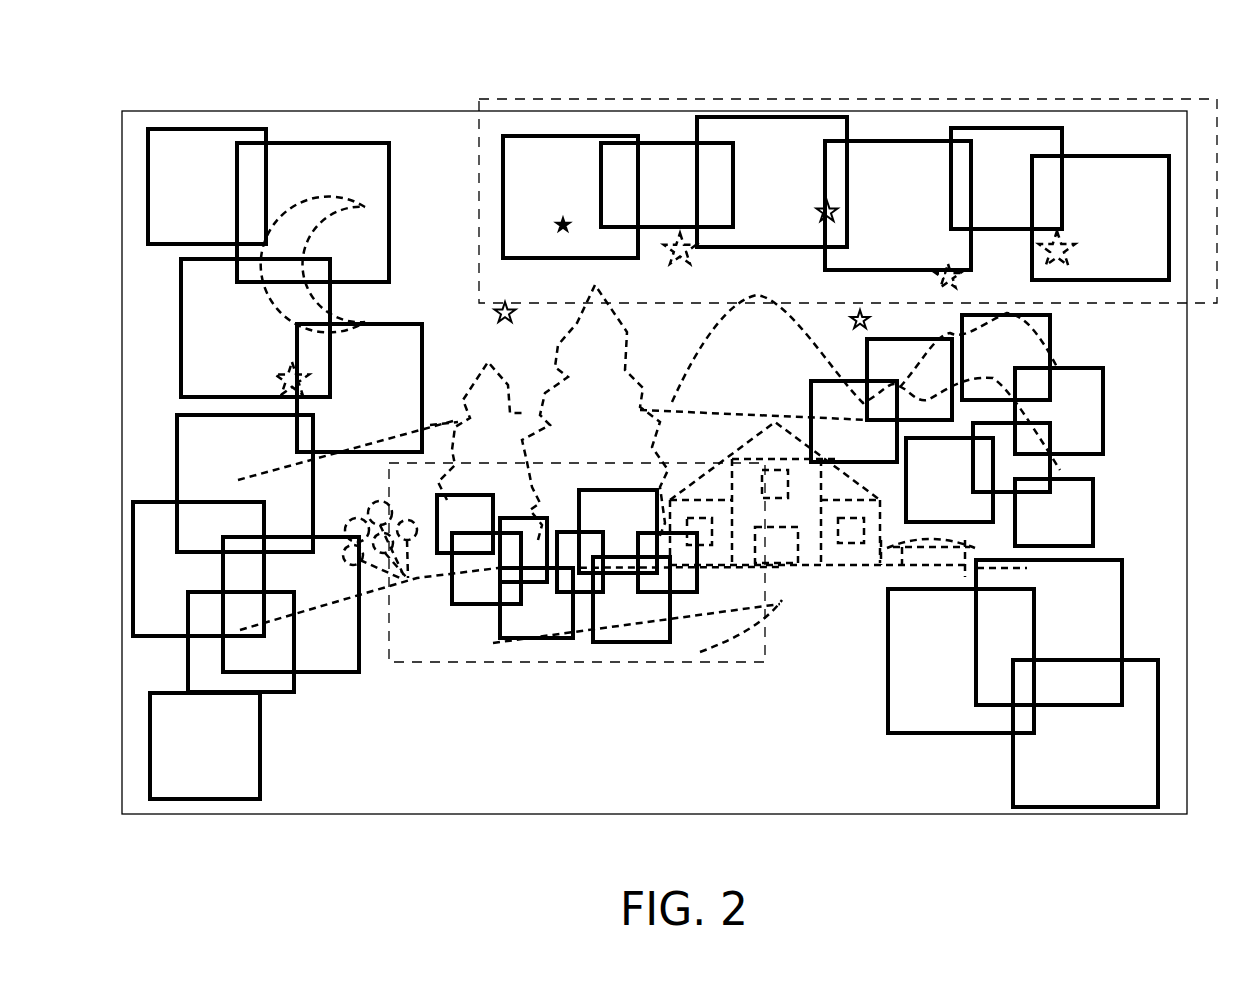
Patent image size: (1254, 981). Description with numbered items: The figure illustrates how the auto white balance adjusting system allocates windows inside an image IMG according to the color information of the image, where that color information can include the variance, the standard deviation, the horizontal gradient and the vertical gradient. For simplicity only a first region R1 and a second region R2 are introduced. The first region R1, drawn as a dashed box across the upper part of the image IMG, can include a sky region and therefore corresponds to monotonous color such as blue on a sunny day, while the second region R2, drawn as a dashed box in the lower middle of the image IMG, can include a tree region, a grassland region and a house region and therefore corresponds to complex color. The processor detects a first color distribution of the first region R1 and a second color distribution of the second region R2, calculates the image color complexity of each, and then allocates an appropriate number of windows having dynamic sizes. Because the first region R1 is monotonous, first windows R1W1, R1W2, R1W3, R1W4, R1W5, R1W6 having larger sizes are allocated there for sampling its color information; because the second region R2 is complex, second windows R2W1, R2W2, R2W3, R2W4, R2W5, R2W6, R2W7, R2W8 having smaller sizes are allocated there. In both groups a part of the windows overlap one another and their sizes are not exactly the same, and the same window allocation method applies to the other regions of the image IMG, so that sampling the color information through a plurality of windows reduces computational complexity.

The image IMG is at (203, 110).
The first region R1 is at (596, 99).
The first window R1W1 is at (502, 180).
The first window R1W2 is at (672, 142).
The first window R1W3 is at (803, 117).
The first window R1W4 is at (918, 139).
The first window R1W5 is at (1022, 127).
The first window R1W6 is at (1130, 155).
The second region R2 is at (766, 598).
The second window R2W1 is at (437, 535).
The second window R2W2 is at (452, 588).
The second window R2W3 is at (533, 583).
The second window R2W4 is at (538, 638).
The second window R2W5 is at (585, 595).
The second window R2W6 is at (620, 577).
The second window R2W7 is at (652, 645).
The second window R2W8 is at (685, 593).